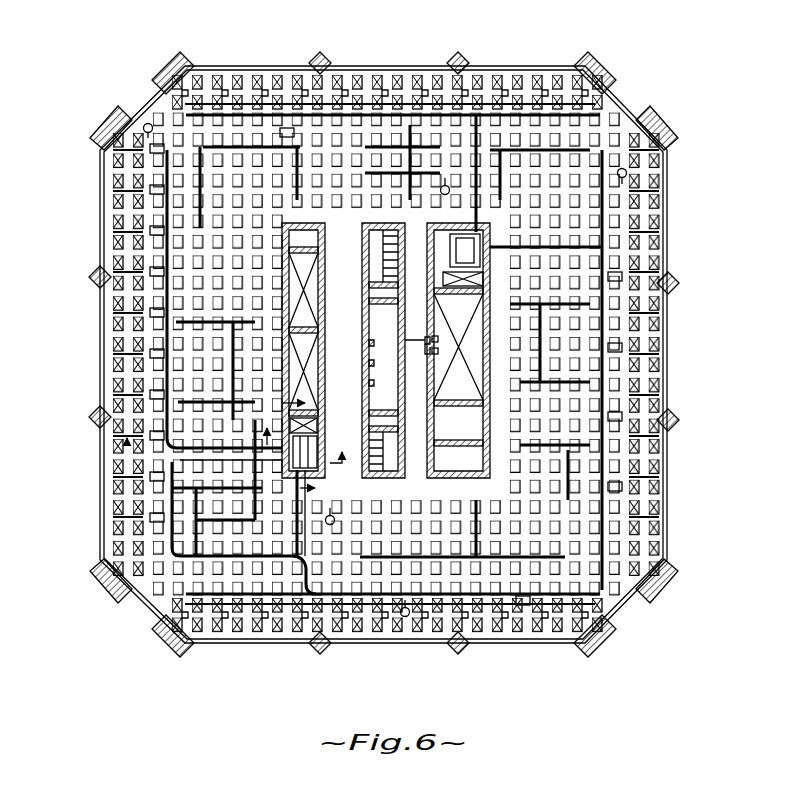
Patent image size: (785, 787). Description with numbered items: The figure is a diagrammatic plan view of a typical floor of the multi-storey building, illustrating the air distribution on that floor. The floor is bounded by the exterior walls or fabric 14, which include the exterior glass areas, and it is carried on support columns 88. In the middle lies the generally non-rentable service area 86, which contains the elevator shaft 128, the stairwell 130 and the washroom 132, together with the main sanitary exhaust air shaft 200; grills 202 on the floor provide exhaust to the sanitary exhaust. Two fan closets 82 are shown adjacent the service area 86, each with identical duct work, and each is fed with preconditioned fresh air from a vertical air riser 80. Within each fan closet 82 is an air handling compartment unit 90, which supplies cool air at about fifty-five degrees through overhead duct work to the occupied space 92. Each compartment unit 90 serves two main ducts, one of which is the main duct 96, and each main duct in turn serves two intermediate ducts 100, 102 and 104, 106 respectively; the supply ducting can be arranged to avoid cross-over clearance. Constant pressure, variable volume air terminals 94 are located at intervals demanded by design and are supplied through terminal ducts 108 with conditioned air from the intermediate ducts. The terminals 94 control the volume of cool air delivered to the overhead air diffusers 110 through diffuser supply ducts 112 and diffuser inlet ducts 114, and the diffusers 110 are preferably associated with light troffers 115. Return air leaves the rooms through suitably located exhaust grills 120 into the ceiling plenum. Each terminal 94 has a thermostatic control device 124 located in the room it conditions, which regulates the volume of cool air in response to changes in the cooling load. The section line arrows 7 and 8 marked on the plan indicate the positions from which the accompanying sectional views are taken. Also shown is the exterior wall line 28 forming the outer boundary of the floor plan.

The exterior wall 14 is at (672, 198).
The exterior wall 28 is at (230, 64).
The vertical air riser 80 is at (446, 278).
The fan closet 82 is at (319, 443).
The service area 86 is at (273, 373).
The support column 88 is at (679, 282).
The air handling compartment unit 90 is at (457, 248).
The occupied space 92 is at (563, 170).
The variable volume air terminal 94 is at (385, 76).
The main duct 96 is at (323, 603).
The intermediate duct 100 is at (440, 600).
The intermediate duct 102 is at (207, 590).
The intermediate duct 104 is at (167, 402).
The intermediate duct 106 is at (163, 522).
The terminal duct 108 is at (286, 137).
The air diffuser 110 is at (476, 80).
The diffuser supply duct 112 is at (428, 92).
The diffuser inlet duct 114 is at (515, 74).
The light troffer 115 is at (612, 122).
The exhaust grill 120 is at (158, 343).
The thermostatic control device 124 is at (149, 123).
The elevator shaft 128 is at (304, 350).
The stairwell 130 is at (375, 287).
The washroom 132 is at (405, 419).
The main sanitary exhaust air shaft 200 is at (417, 335).
The grill 202 is at (418, 352).
The section line 7- 7 is at (307, 440).
The section line 8- 8 is at (308, 459).